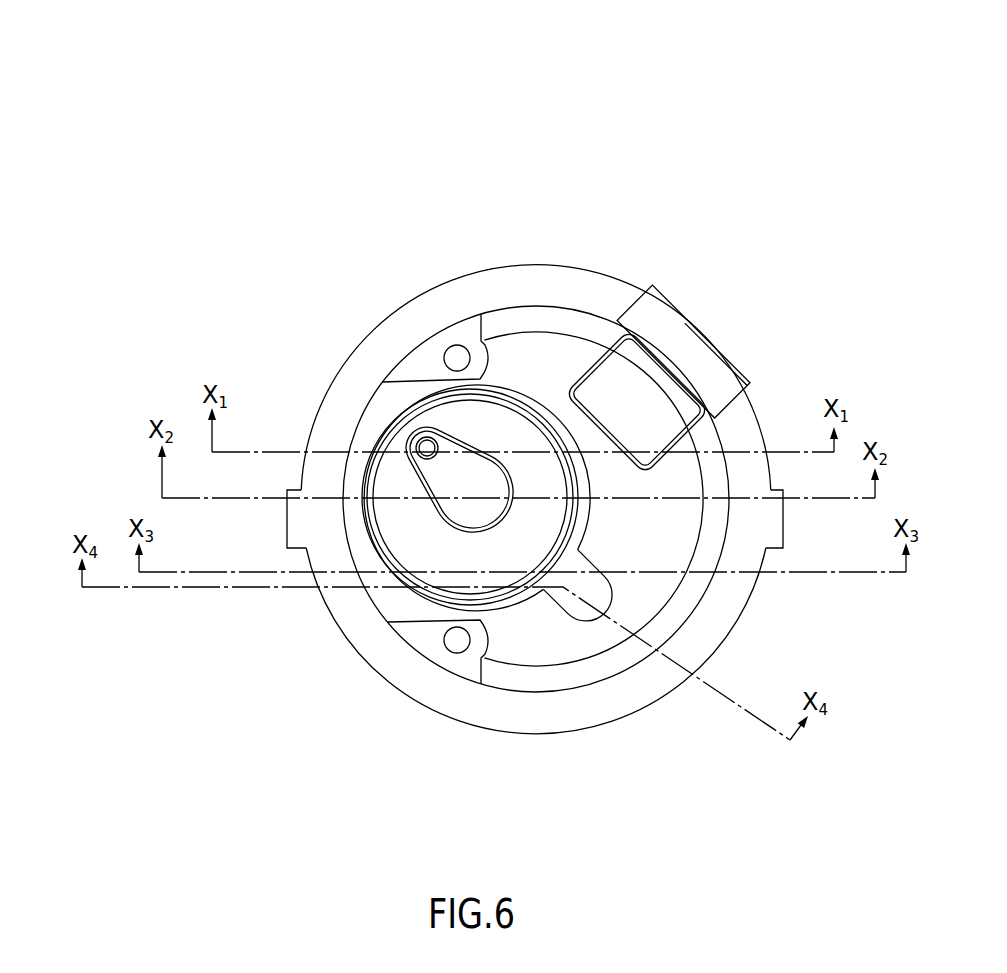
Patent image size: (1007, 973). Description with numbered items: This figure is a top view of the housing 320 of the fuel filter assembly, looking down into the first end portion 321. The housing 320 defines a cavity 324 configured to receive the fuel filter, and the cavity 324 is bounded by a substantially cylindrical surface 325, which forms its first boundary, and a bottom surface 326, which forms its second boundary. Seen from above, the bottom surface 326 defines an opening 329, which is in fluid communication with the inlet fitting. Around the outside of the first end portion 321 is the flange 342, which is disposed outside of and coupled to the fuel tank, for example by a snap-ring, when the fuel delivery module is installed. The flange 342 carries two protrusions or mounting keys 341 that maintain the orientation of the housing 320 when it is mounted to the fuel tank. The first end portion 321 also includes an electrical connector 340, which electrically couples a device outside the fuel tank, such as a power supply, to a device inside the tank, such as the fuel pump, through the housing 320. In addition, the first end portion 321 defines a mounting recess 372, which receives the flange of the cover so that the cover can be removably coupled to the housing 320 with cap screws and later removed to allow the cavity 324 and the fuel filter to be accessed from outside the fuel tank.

The housing 320 is at (382, 105).
The first end portion 321 is at (440, 718).
The cavity 324 is at (415, 387).
The substantially cylindrical surface 325 is at (545, 432).
The bottom surface 326 is at (487, 430).
The opening 329 is at (423, 447).
The electrical connector 340 is at (683, 335).
The mounting keys 341 is at (288, 520).
The flange 342 is at (360, 618).
The mounting recess 372 is at (390, 613).